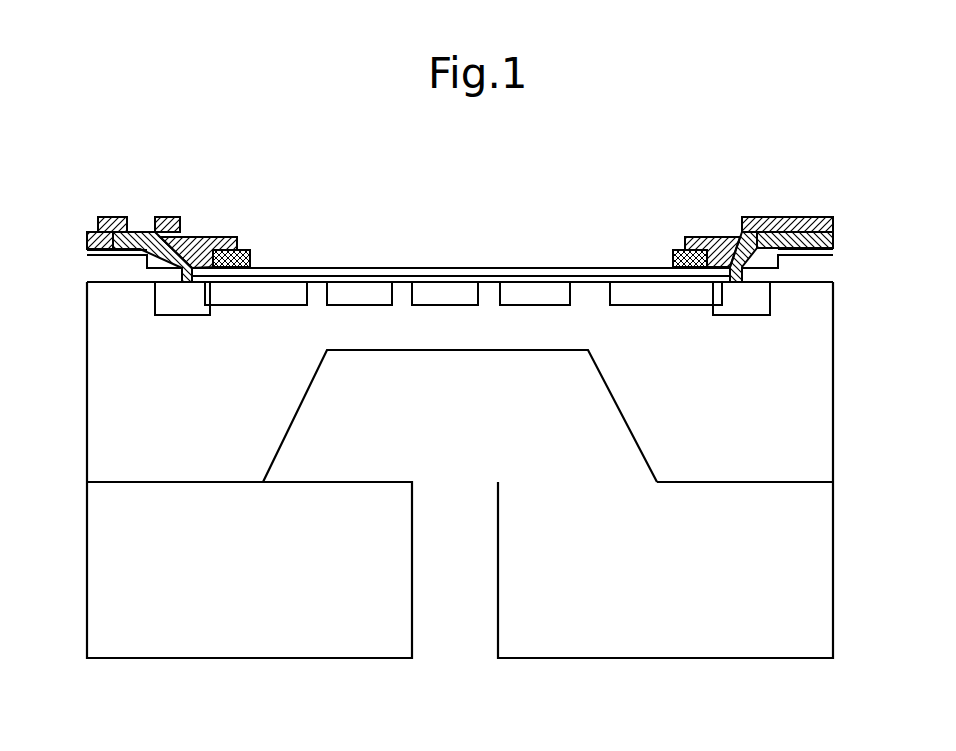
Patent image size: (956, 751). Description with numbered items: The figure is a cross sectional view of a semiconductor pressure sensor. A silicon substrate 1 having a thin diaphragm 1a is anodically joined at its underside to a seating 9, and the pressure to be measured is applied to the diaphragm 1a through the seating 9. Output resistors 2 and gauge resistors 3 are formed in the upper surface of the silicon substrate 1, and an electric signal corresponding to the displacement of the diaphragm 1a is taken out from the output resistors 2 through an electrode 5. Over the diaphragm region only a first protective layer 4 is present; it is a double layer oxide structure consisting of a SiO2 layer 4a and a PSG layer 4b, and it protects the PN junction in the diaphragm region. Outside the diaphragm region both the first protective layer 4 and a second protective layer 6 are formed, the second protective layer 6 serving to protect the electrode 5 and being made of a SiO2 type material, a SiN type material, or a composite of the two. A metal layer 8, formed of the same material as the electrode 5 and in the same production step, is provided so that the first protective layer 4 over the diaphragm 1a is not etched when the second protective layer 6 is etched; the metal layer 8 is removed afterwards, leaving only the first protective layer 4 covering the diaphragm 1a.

The silicon substrate 1 is at (822, 388).
The diaphragm 1a is at (437, 348).
The output resistors 2 is at (183, 306).
The gauge resistors 3 is at (255, 297).
The first protective layer 4 is at (367, 258).
The SiO2 layer 4a is at (95, 270).
The PSG layer 4b is at (95, 253).
The electrode 5 is at (136, 232).
The second protective layer 6 is at (203, 240).
The metal layer 8 is at (240, 252).
The seating 9 is at (737, 643).